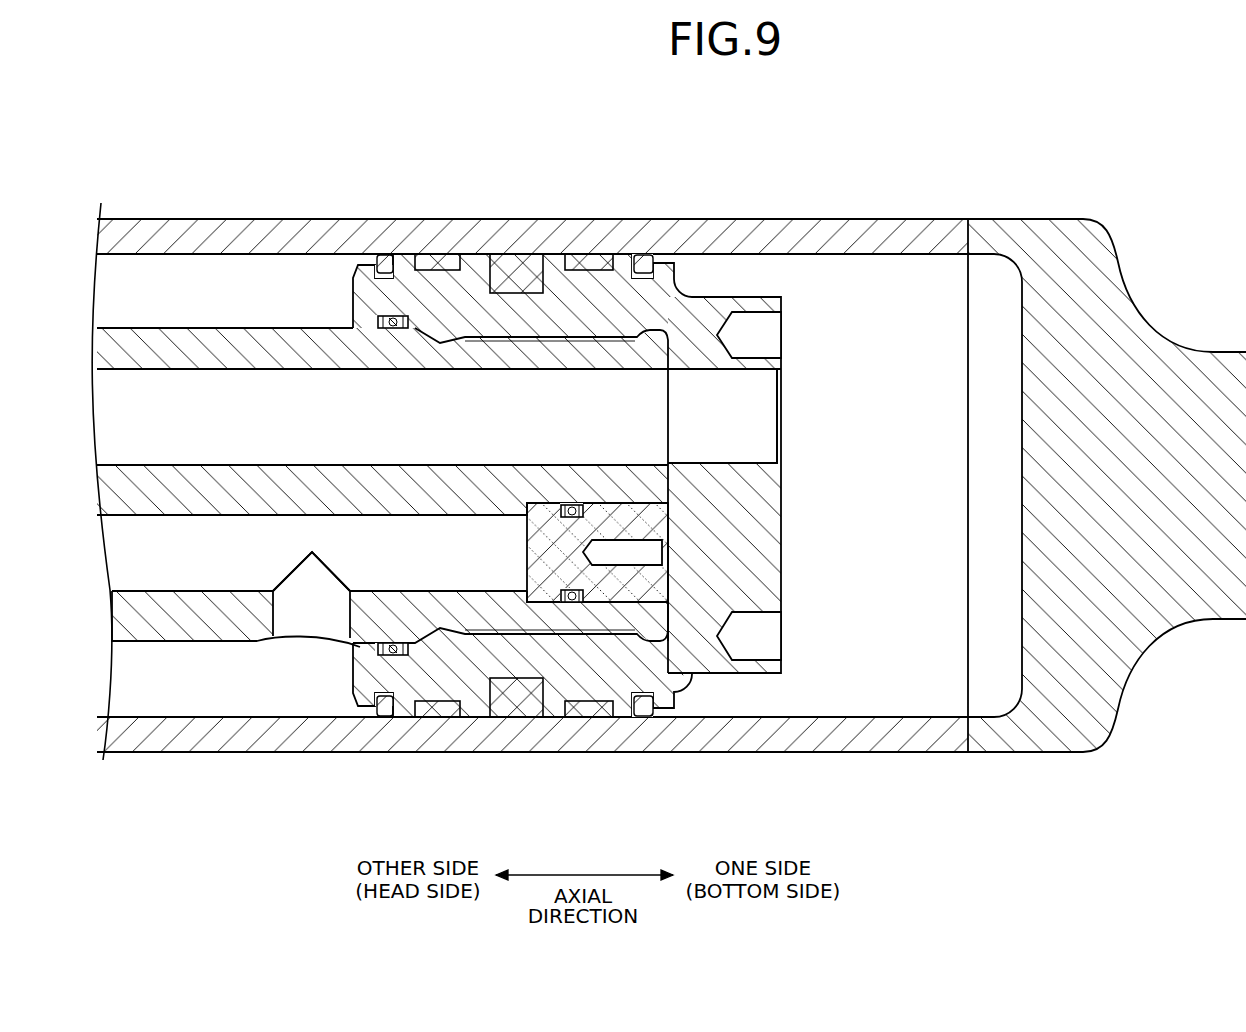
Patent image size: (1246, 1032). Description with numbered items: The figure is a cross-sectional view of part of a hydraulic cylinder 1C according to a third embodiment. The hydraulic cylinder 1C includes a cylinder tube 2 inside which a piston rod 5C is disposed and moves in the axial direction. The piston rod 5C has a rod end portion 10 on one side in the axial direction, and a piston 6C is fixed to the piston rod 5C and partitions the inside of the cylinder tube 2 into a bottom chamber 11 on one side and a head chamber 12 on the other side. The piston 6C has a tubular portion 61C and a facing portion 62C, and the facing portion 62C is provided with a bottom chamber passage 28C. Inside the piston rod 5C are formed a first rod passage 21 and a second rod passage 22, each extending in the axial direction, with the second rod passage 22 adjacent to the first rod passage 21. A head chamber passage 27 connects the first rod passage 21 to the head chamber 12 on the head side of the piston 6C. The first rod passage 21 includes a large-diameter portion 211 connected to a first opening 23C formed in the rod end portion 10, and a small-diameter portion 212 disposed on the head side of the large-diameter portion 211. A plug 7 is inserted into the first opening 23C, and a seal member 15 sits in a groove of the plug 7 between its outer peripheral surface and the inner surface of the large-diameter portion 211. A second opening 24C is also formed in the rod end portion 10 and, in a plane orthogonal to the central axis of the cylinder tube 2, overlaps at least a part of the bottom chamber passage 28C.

The hydraulic cylinder 1C is at (958, 188).
The cylinder tube 2 is at (246, 218).
The piston rod 5C is at (203, 327).
The piston 6C is at (690, 297).
The plug 7 is at (612, 590).
The rod end portion 10 is at (671, 616).
The bottom chamber 11 is at (900, 283).
The head chamber 12 is at (280, 695).
The seal member 15 is at (570, 604).
The first rod passage 21 is at (207, 577).
The second rod passage 22 is at (298, 383).
The second opening 24C is at (664, 376).
The head chamber passage 27 is at (320, 613).
The bottom chamber passage 28C is at (765, 435).
The tubular portion 61C is at (575, 300).
The facing portion 62C is at (770, 567).
The large-diameter portion 211 is at (550, 598).
The small-diameter portion 212 is at (482, 590).
The first opening 23C is at (660, 600).